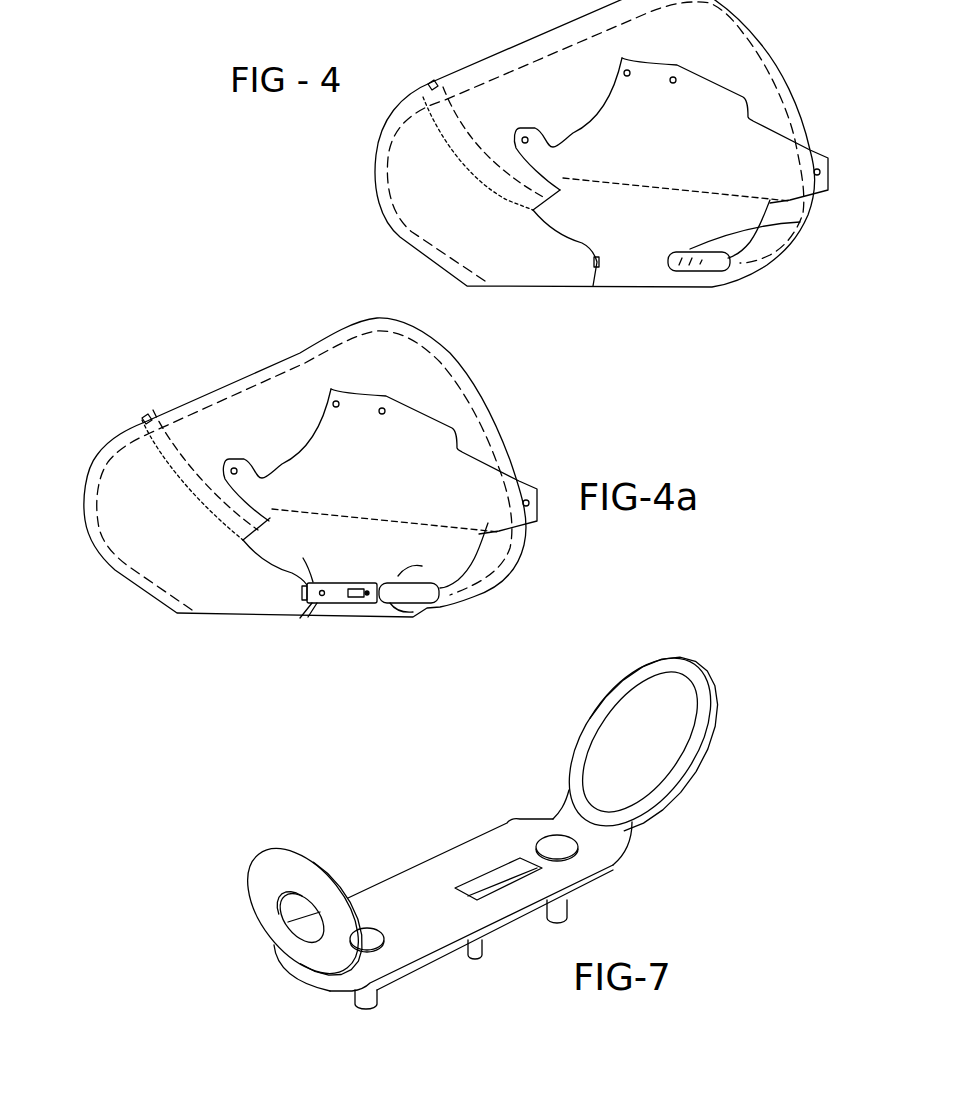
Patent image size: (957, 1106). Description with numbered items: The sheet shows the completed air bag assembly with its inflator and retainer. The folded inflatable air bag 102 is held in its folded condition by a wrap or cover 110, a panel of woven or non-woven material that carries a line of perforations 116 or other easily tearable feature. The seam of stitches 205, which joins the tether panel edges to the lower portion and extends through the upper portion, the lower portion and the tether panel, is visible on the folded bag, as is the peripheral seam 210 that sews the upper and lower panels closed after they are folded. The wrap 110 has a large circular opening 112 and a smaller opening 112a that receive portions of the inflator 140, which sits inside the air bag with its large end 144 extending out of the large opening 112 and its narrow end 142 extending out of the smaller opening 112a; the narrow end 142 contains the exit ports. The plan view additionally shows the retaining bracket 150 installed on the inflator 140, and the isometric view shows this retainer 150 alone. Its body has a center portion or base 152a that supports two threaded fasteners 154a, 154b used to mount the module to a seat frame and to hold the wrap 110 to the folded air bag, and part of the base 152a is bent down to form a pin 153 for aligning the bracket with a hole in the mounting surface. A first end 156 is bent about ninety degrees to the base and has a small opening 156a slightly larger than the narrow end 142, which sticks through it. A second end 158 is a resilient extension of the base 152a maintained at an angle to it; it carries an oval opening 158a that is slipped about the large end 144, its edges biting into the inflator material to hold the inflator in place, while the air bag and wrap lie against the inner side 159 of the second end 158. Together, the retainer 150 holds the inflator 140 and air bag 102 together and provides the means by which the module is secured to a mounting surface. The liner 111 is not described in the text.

In FIG. 4, the inflatable air bag 102 is at (537, 73).
In FIG. 4A, the inflatable air bag 102 is at (247, 407).
In FIG. 4, the stitches 205 is at (470, 133).
In FIG. 4A, the stitches 205 is at (182, 467).
In FIG. 4, the wrap or cover 110 is at (757, 145).
In FIG. 4A, the wrap or cover 110 is at (467, 473).
In FIG. 4, the liner 111 is at (460, 160).
In FIG. 4A, the liner 111 is at (183, 507).
In FIG. 4, the line of perforations 116 is at (677, 190).
In FIG. 4A, the line of perforations 116 is at (388, 520).
In FIG. 4, the peripheral seam 210 is at (390, 215).
In FIG. 4A, the peripheral seam 210 is at (97, 512).
In FIG. 4, the large circular opening 112 is at (670, 257).
In FIG. 4A, the large circular opening 112 is at (365, 555).
In FIG. 4, the large end 144 is at (712, 285).
In FIG. 4, the inflator 140 is at (720, 276).
In FIG. 4A, the inflator 140 is at (430, 596).
In FIG. 4, the narrow end 142 is at (593, 263).
In FIG. 4, the smaller opening 112a is at (600, 262).
In FIG. 4A, the retaining bracket 150 is at (333, 597).
In FIG. 7, the retaining bracket 150 is at (415, 892).
In FIG. 7, the inner side 159 is at (673, 660).
In FIG. 7, the oval opening 158a is at (627, 695).
In FIG. 7, the second end 158 is at (700, 760).
In FIG. 7, the center portion or base 152a is at (472, 850).
In FIG. 7, the small opening 156a is at (297, 893).
In FIG. 7, the first end 156 is at (263, 900).
In FIG. 7, the threaded fastener 154b is at (570, 907).
In FIG. 7, the threaded fastener 154a is at (380, 1003).
In FIG. 7, the pin 153 is at (467, 957).